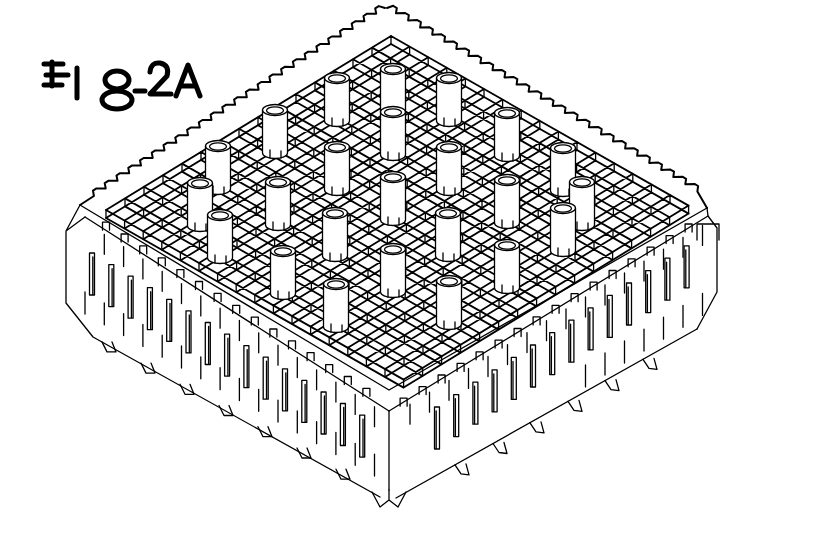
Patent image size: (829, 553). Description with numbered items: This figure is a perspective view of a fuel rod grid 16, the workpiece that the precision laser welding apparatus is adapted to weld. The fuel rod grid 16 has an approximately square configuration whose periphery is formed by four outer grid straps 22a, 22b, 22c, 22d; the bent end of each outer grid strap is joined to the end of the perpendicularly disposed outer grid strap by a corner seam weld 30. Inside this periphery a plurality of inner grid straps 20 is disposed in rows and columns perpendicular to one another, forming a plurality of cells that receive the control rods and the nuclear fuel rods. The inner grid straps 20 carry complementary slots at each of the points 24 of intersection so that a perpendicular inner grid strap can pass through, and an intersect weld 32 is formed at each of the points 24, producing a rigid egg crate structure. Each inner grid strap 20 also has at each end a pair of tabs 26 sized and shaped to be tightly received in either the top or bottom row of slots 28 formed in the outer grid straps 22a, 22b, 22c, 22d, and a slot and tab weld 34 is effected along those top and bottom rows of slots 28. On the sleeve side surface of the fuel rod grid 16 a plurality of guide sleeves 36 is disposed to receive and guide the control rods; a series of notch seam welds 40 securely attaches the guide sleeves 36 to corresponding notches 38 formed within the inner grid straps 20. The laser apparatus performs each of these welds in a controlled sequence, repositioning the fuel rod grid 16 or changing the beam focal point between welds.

The fuel rod grid 16 is at (382, 272).
The inner grid straps 20 is at (659, 161).
The outer grid strap 22a is at (571, 369).
The outer grid strap 22b is at (248, 92).
The outer grid strap 22c is at (436, 42).
The outer grid strap 22d is at (227, 351).
The points of intersection 24 is at (190, 200).
The tabs 26 is at (700, 242).
The slots 28 is at (648, 342).
The corner seam weld 30 is at (378, 480).
The intersect weld 32 is at (124, 226).
The slot and tab weld 34 is at (435, 478).
The guide sleeves 36 is at (162, 166).
The notches 38 is at (232, 416).
The notch seam welds 40 is at (311, 232).